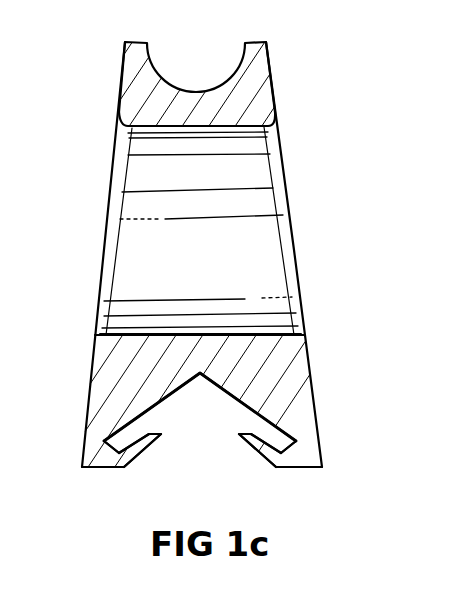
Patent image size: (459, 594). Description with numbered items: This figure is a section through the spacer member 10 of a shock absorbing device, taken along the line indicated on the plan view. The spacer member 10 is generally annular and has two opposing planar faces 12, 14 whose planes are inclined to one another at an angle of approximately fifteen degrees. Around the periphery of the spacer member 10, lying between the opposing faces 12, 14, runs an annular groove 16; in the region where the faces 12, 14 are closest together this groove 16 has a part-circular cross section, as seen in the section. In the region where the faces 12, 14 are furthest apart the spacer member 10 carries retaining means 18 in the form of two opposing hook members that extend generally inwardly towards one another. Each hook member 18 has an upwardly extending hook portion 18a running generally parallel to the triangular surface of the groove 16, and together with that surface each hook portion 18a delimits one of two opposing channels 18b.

The spacer member 10 is at (304, 171).
The opposing face 12 is at (111, 180).
The opposing face 14 is at (294, 249).
The annular groove 16 is at (190, 91).
The retaining means 18 is at (93, 471).
The hook portion 18a is at (140, 452).
The opposing channel 18b is at (119, 440).